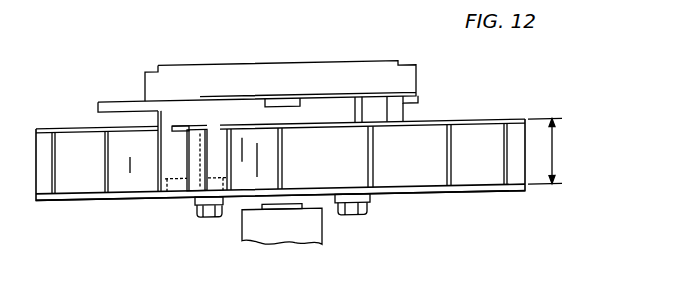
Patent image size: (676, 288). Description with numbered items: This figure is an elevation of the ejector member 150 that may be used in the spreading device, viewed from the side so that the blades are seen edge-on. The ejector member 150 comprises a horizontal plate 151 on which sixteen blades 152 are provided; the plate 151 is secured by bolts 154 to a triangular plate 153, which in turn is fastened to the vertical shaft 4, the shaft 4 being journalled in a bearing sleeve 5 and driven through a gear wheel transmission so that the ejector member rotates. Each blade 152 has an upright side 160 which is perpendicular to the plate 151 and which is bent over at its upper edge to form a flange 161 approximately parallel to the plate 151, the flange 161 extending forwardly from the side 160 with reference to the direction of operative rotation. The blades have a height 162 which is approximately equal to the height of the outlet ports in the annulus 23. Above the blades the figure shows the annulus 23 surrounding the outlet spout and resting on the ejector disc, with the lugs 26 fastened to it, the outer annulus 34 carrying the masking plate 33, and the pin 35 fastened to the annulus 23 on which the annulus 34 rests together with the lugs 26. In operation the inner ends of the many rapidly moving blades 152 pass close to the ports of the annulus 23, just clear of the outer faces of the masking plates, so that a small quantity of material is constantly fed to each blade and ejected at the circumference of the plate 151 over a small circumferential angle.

The vertical shaft 4 is at (272, 210).
The bearing sleeve 5 is at (247, 222).
The annulus 23 is at (231, 46).
The lugs 26 is at (108, 96).
The masking plate 33 is at (378, 90).
The annulus 34 is at (148, 77).
The pin 35 is at (296, 107).
The ejector member 150 is at (117, 197).
The horizontal plate 151 is at (466, 193).
The blades 152 is at (515, 125).
The triangular plate 153 is at (333, 210).
The bolts 154 is at (372, 213).
The upright side 160 is at (186, 144).
The flange 161 is at (179, 124).
The height 162 is at (552, 158).